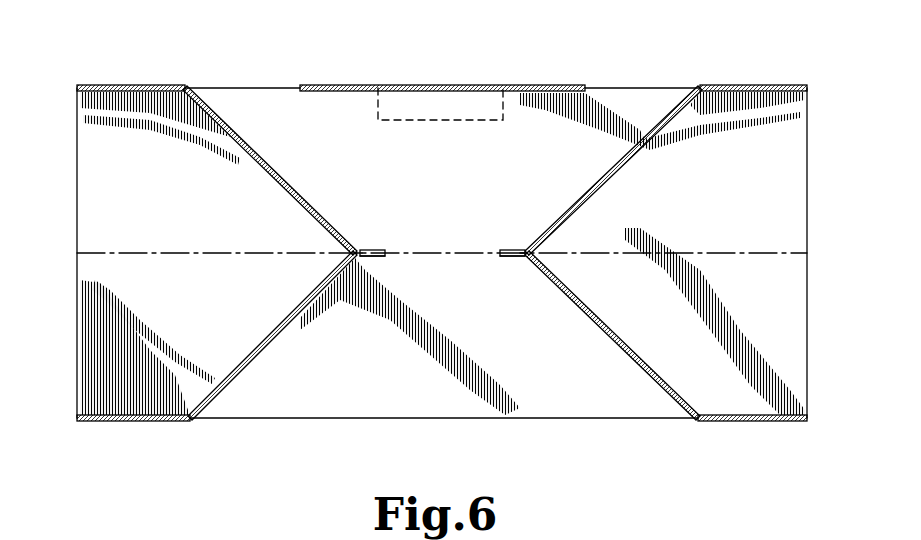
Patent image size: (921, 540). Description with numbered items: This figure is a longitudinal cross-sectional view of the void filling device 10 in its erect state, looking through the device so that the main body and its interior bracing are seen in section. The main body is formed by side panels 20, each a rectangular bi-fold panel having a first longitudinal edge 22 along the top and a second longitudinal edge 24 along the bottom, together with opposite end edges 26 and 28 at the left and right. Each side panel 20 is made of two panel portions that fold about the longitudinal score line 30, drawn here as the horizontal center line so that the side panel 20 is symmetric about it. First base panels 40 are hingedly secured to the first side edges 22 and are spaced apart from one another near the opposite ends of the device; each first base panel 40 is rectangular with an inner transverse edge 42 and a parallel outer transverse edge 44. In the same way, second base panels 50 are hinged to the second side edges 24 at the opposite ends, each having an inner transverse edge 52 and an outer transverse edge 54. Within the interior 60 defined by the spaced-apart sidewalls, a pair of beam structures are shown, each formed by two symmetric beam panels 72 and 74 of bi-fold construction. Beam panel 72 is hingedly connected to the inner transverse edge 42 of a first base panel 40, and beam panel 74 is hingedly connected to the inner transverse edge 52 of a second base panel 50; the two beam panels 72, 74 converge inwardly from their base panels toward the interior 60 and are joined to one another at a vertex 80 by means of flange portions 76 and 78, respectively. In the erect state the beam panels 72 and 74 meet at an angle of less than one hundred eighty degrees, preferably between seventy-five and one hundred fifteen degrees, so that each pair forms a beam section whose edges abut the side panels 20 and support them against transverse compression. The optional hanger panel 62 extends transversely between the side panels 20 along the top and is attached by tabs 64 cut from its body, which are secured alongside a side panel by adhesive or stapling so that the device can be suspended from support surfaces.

The void filling device 10 is at (815, 267).
The side panel 20 is at (77, 252).
The first longitudinal edge 22 is at (231, 88).
The second longitudinal edge 24 is at (302, 420).
The end edge 26 is at (77, 178).
The end edge 28 is at (807, 182).
The score line 30 is at (118, 258).
The first base panel 40 is at (134, 87).
The inner transverse edge 42 is at (190, 90).
The outer transverse edge 44 is at (77, 87).
The second base panel 50 is at (120, 422).
The inner transverse edge 52 is at (195, 422).
The outer transverse edge 54 is at (77, 422).
The interior 60 is at (524, 400).
The hanger panel 62 is at (490, 88).
The tab 64 is at (440, 121).
The beam panel 72 is at (262, 160).
The beam panel 74 is at (283, 323).
The flange portion 76 is at (372, 248).
The flange portion 78 is at (375, 258).
The vertex 80 is at (358, 250).